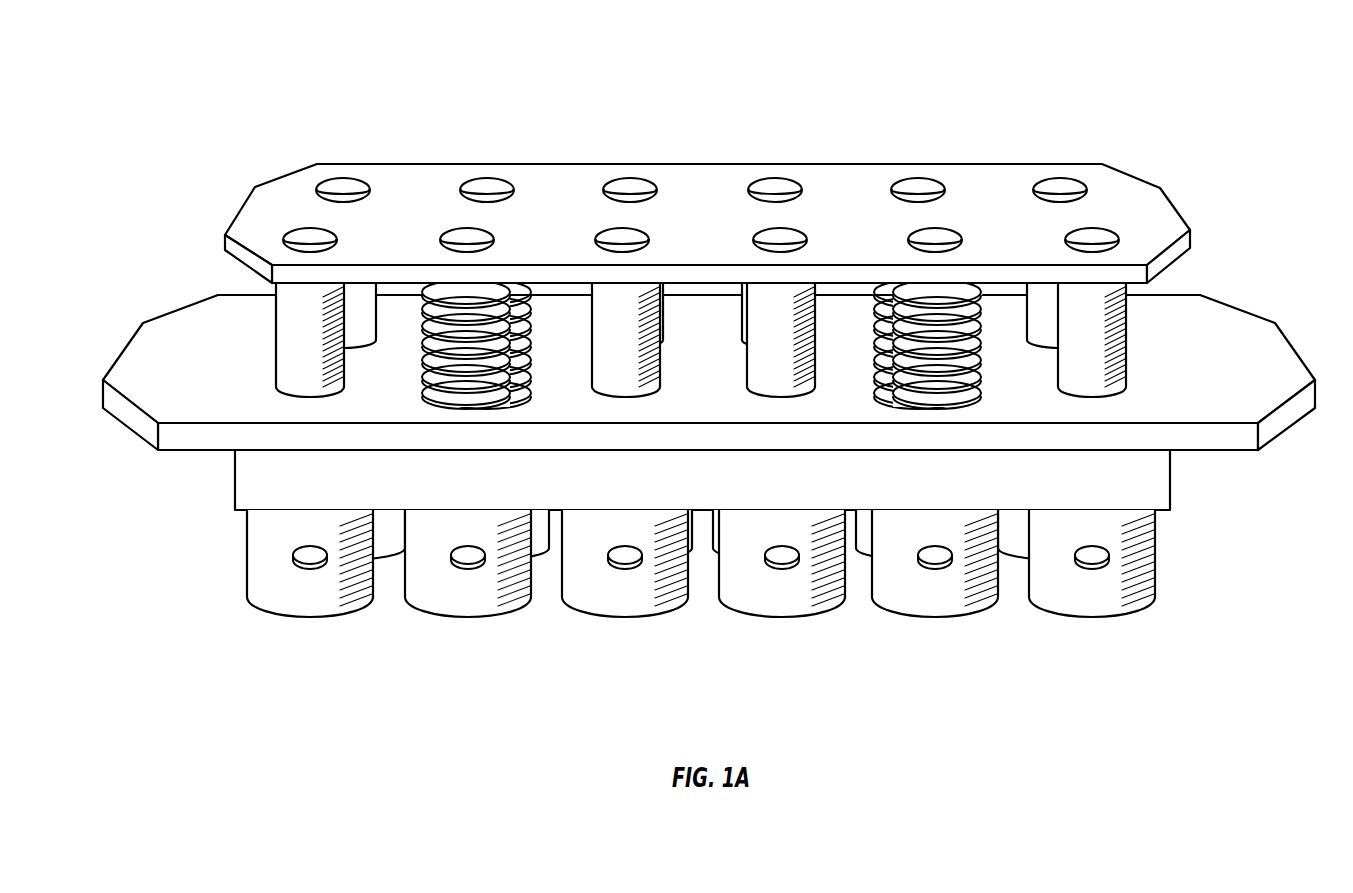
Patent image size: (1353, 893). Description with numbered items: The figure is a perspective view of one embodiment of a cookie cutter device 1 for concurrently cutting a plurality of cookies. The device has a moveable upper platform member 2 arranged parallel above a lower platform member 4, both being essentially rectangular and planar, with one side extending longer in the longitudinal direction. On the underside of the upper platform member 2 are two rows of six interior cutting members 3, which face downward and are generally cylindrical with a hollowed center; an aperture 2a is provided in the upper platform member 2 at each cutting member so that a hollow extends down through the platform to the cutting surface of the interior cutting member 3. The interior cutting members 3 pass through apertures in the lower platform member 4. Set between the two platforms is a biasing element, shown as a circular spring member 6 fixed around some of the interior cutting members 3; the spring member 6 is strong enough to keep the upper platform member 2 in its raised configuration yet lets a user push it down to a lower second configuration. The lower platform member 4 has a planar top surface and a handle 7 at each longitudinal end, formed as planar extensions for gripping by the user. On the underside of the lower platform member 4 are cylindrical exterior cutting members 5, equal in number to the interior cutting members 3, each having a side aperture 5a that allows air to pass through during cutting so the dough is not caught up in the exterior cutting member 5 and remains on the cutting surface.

The cookie cutter device 1 is at (582, 64).
The upper platform member 2 is at (258, 205).
The aperture 2a is at (367, 183).
The interior cutting member 3 is at (288, 337).
The lower platform member 4 is at (142, 357).
The exterior cutting member 5 is at (263, 542).
The side aperture 5a is at (295, 563).
The spring member 6 is at (427, 372).
The handle 7 is at (133, 418).